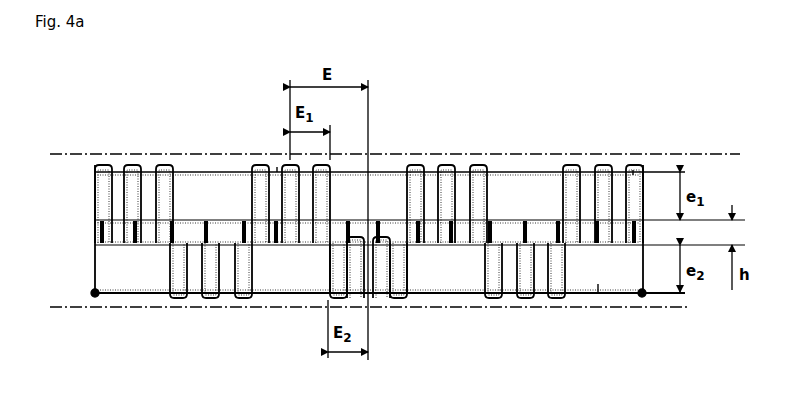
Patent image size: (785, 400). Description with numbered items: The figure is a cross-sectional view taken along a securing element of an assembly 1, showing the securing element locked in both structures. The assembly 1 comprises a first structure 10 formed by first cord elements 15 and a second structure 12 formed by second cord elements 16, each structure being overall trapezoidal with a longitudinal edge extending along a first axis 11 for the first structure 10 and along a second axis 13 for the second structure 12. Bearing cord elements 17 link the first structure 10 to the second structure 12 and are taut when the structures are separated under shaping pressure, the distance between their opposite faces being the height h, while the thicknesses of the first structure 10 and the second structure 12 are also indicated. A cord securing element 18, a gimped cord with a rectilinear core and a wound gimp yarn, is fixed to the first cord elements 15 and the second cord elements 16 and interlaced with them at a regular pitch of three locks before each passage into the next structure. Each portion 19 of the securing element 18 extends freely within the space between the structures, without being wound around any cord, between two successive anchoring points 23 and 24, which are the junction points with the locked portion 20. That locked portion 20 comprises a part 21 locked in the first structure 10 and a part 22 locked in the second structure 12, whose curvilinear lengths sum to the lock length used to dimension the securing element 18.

The assembly 1 is at (552, 86).
The first structure 10 is at (277, 168).
The first axis 11 is at (578, 152).
The second structure 12 is at (598, 285).
The second axis 13 is at (625, 307).
The first cord elements 15 is at (195, 170).
The second cord elements 16 is at (262, 300).
The bearing cord elements 17 is at (170, 232).
The cord securing element 18 is at (633, 170).
The portion extending within the space 19 is at (172, 263).
The locked portion 20 is at (203, 268).
The part locked in the first structure 21 is at (448, 158).
The part locked in the second structure 22 is at (526, 298).
The anchoring point in the first structure 23 is at (252, 165).
The anchoring point in the second structure 24 is at (95, 295).